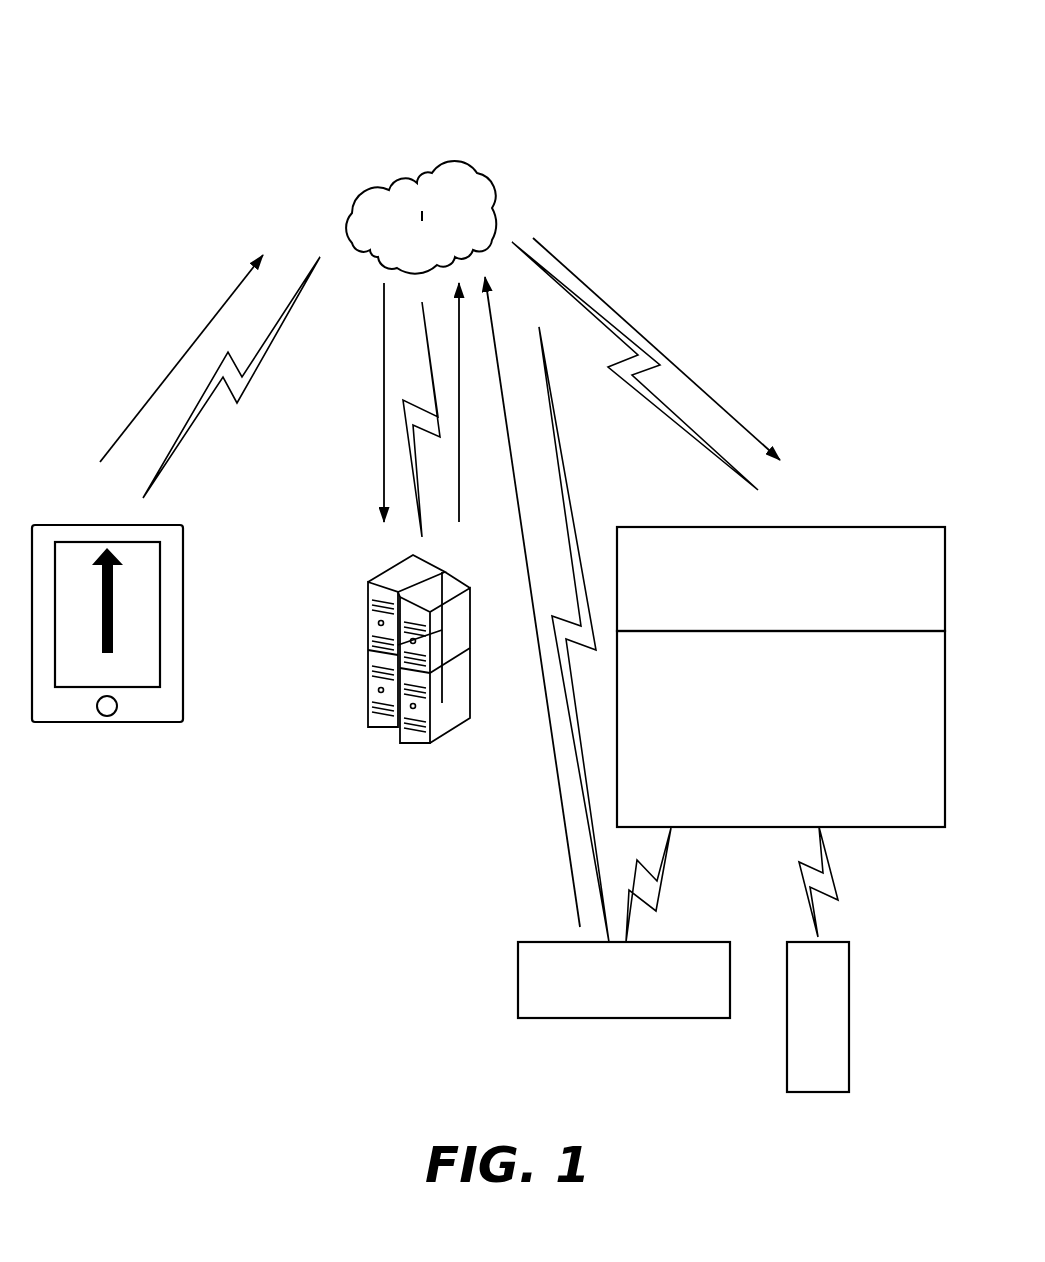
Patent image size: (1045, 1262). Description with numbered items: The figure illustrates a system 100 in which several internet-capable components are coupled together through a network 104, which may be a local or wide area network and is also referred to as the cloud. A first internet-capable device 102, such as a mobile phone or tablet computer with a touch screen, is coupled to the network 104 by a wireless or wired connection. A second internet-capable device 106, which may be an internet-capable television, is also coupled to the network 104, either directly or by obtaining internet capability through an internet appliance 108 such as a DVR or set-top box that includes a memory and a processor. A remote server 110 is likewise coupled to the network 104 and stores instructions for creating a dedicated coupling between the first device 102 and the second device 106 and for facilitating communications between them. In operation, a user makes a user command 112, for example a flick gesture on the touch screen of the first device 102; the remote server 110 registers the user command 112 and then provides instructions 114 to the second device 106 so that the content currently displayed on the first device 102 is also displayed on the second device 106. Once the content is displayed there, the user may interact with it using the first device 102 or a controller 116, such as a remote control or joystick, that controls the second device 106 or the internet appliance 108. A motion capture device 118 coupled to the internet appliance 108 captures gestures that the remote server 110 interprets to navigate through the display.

The system 100 is at (153, 29).
The first internet-capable device 102 is at (163, 722).
The network 104 is at (498, 208).
The second internet-capable device 106 is at (781, 729).
The internet appliance 108 is at (781, 579).
The remote server 110 is at (427, 748).
The user command 112 is at (242, 603).
The instructions 114 is at (619, 590).
The controller 116 is at (818, 959).
The motion capture device 118 is at (624, 923).